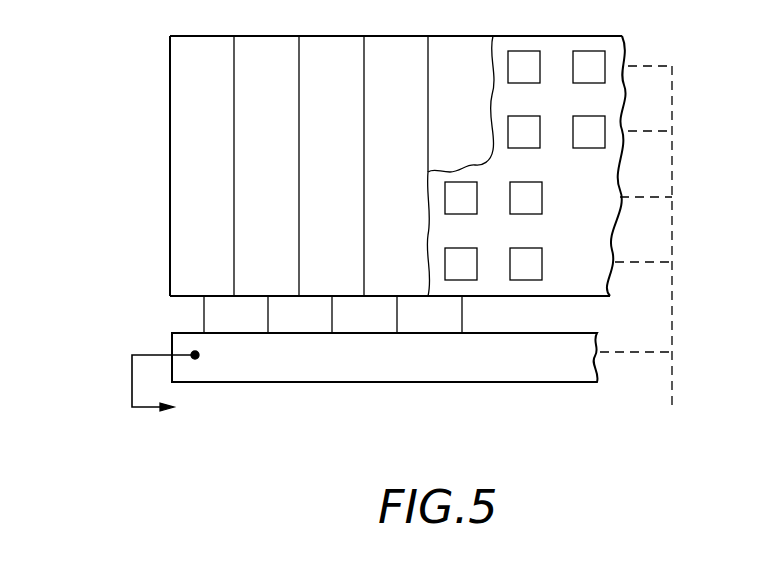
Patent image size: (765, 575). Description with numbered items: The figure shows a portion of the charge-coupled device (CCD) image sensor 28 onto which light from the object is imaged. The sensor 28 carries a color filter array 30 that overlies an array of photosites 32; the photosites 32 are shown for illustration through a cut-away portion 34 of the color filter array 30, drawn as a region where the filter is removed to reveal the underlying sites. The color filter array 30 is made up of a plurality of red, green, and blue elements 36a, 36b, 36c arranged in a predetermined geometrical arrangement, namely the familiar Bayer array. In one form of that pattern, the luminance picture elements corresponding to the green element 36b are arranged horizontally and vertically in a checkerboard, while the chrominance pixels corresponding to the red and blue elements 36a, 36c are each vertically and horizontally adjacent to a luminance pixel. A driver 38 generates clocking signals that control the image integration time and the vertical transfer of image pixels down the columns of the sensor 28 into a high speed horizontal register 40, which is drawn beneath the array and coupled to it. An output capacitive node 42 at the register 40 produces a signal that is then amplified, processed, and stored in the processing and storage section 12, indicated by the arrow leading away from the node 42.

The processing and storage section 12 is at (194, 409).
The charge-coupled device (CCD) image sensor 28 is at (340, 148).
The color filter array 30 is at (266, 36).
The photosites 32 is at (525, 51).
The cut-away portion 34 is at (500, 163).
The red element 36a is at (256, 82).
The green element 36b is at (258, 143).
The blue element 36c is at (206, 163).
The driver 38 is at (644, 256).
The high speed horizontal register 40 is at (500, 382).
The output capacitive node 42 is at (200, 354).